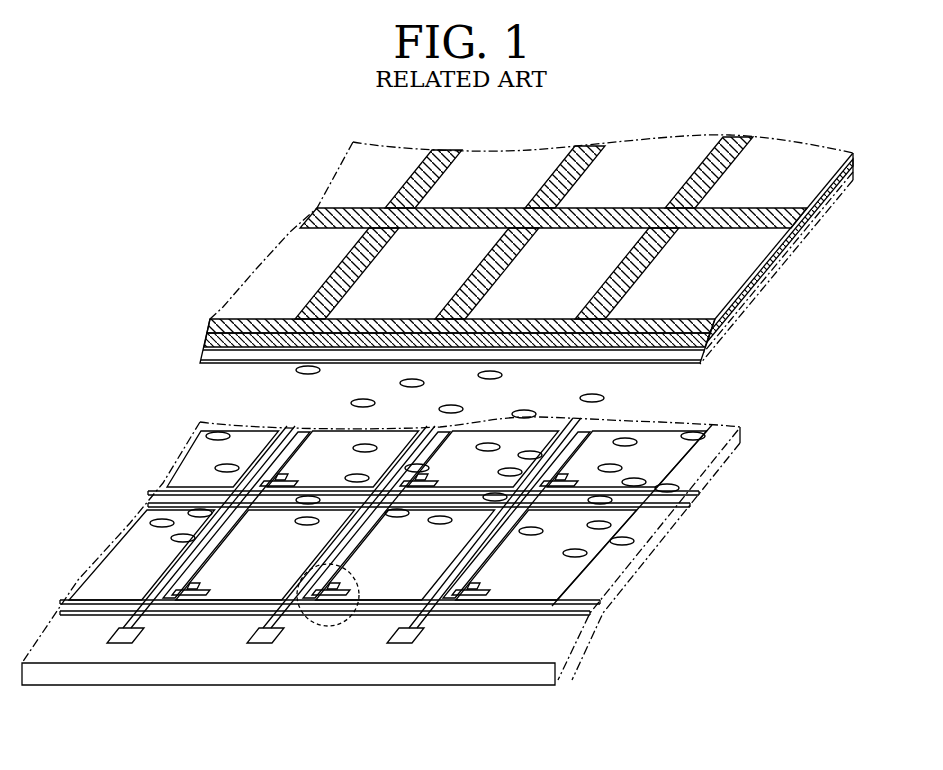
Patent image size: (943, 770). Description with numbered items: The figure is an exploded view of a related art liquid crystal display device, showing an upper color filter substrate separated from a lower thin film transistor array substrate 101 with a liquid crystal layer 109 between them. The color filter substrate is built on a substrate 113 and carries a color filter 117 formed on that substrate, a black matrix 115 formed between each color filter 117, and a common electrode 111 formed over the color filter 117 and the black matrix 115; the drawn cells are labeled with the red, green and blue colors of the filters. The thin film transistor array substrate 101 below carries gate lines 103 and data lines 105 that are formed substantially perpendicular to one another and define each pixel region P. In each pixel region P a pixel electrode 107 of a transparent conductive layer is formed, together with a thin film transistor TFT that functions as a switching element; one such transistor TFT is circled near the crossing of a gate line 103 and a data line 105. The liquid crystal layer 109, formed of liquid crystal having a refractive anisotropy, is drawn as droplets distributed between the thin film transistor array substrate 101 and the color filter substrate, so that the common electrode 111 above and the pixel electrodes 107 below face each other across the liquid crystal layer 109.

The thin film transistor array substrate 101 is at (410, 673).
The gate line 103 is at (580, 612).
The data line 105 is at (267, 637).
The pixel electrode 107 is at (583, 575).
The liquid crystal layer 109 is at (679, 488).
The pixel region P is at (643, 528).
The thin film transistor TFT is at (327, 627).
The common electrode 111 is at (703, 362).
The substrate 113 is at (700, 350).
The black matrix 115 is at (793, 220).
The color filter 117 is at (803, 187).